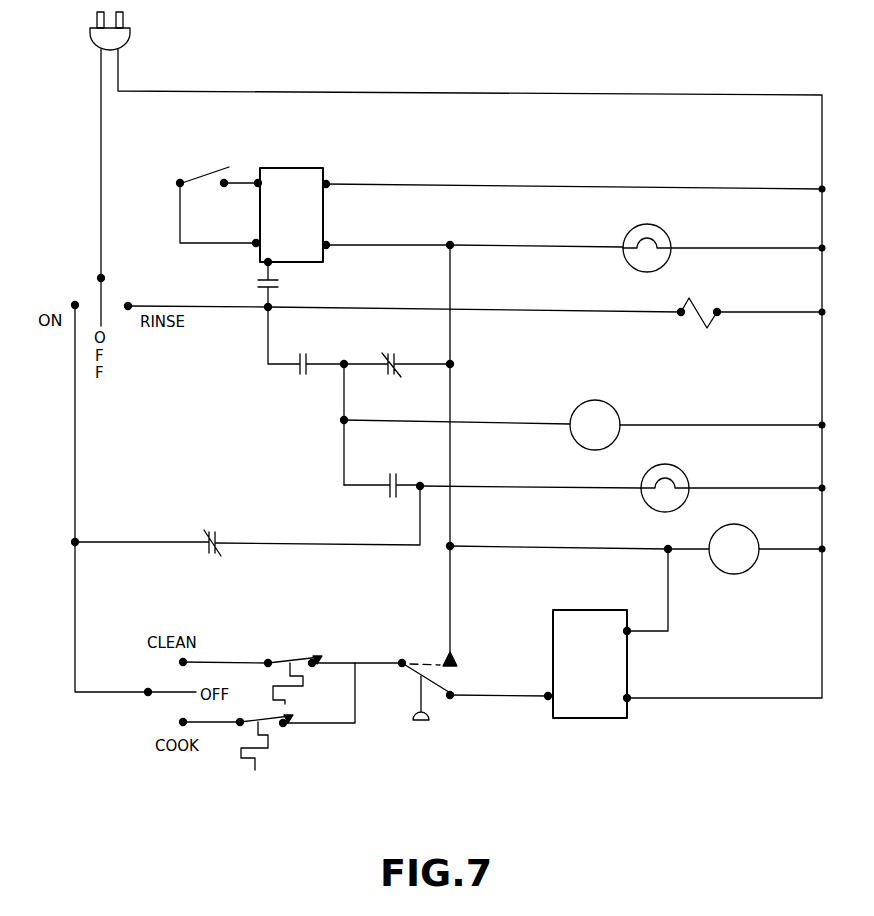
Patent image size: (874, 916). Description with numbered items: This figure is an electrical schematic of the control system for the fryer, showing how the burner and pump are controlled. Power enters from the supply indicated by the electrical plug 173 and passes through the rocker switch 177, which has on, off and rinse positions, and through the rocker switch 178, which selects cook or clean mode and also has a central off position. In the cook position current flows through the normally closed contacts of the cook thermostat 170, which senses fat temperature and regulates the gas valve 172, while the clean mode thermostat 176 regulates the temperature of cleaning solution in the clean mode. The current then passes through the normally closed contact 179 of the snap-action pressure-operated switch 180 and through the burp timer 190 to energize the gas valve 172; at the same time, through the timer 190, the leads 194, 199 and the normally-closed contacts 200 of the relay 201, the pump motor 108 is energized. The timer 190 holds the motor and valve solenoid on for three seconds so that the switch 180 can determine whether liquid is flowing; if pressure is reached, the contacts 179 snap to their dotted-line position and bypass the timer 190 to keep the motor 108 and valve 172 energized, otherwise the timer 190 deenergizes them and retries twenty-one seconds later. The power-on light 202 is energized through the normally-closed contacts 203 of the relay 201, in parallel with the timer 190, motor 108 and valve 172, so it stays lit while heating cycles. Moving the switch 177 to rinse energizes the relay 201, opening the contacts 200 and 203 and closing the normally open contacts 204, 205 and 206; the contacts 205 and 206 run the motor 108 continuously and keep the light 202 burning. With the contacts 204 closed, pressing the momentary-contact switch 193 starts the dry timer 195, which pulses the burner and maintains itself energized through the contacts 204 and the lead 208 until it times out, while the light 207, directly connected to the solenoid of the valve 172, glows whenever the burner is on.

The electrical plug 173 is at (96, 40).
The rocker switch 177 is at (86, 290).
The momentary-contact switch 193 is at (208, 172).
The dry timer 195 is at (285, 167).
The lead 208 is at (584, 187).
The light 207 is at (670, 232).
The normally open contacts 204 is at (262, 280).
The relay 201 is at (695, 300).
The normally open contacts 205 is at (293, 372).
The normally-closed contacts 200 is at (400, 363).
The lead 194 is at (452, 588).
The lead 199 is at (502, 420).
The pump motor 108 is at (612, 405).
The normally open contacts 206 is at (385, 489).
The light 202 is at (688, 470).
The normally-closed contacts 203 is at (223, 532).
The gas valve 172 is at (748, 567).
The burp timer 190 is at (600, 720).
The rocker switch 178 is at (156, 711).
The clean mode thermostat 176 is at (297, 659).
The cook thermostat 170 is at (270, 722).
The snap-action pressure-operated switch 180 is at (452, 678).
The normally closed contact 179 is at (436, 690).